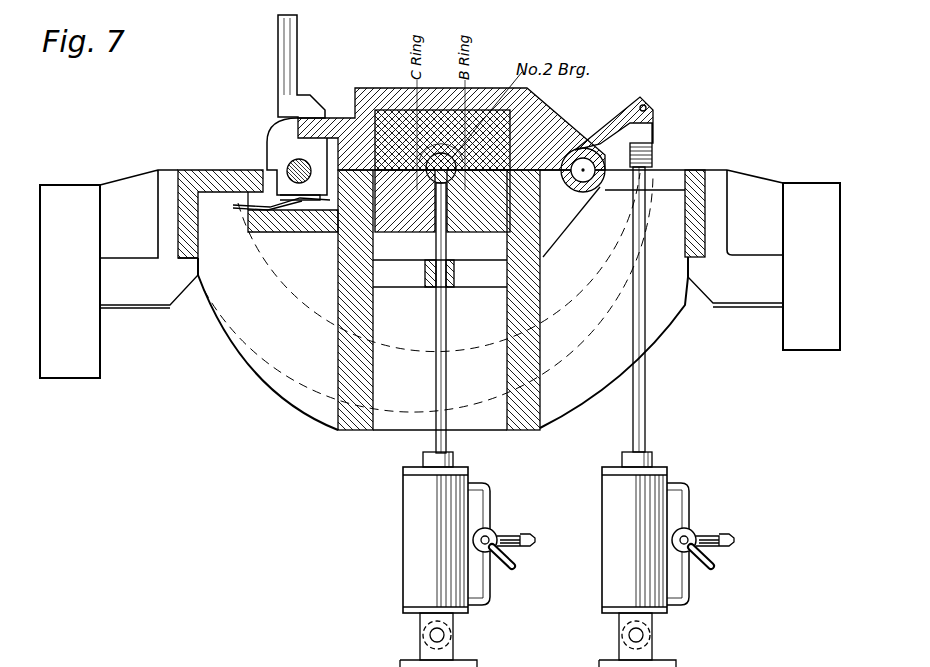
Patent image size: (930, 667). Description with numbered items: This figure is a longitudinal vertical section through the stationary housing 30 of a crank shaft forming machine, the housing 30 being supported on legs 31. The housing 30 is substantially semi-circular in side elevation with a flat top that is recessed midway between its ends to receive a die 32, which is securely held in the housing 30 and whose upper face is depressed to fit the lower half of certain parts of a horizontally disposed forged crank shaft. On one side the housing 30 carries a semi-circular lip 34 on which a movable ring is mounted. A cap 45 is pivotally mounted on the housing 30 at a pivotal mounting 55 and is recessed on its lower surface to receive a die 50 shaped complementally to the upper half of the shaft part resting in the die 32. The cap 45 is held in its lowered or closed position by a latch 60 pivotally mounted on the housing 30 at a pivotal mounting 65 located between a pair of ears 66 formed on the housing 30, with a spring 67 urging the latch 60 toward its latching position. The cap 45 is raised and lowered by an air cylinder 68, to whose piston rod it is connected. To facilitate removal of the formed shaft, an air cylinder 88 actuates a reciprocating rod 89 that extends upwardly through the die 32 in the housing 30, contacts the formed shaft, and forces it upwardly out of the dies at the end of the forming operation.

The stationary housing 30 is at (297, 283).
The legs 31 is at (75, 370).
The die 32 is at (462, 228).
The lip 34 is at (300, 300).
The cap 45 is at (470, 90).
The die 50 is at (550, 113).
The pivotal mounting 55 is at (588, 140).
The latch 60 is at (293, 100).
The pivotal mounting 65 is at (288, 164).
The ears 66 is at (273, 137).
The spring 67 is at (256, 201).
The air cylinder 68 is at (612, 497).
The air cylinder 88 is at (410, 543).
The reciprocating rod 89 is at (425, 420).